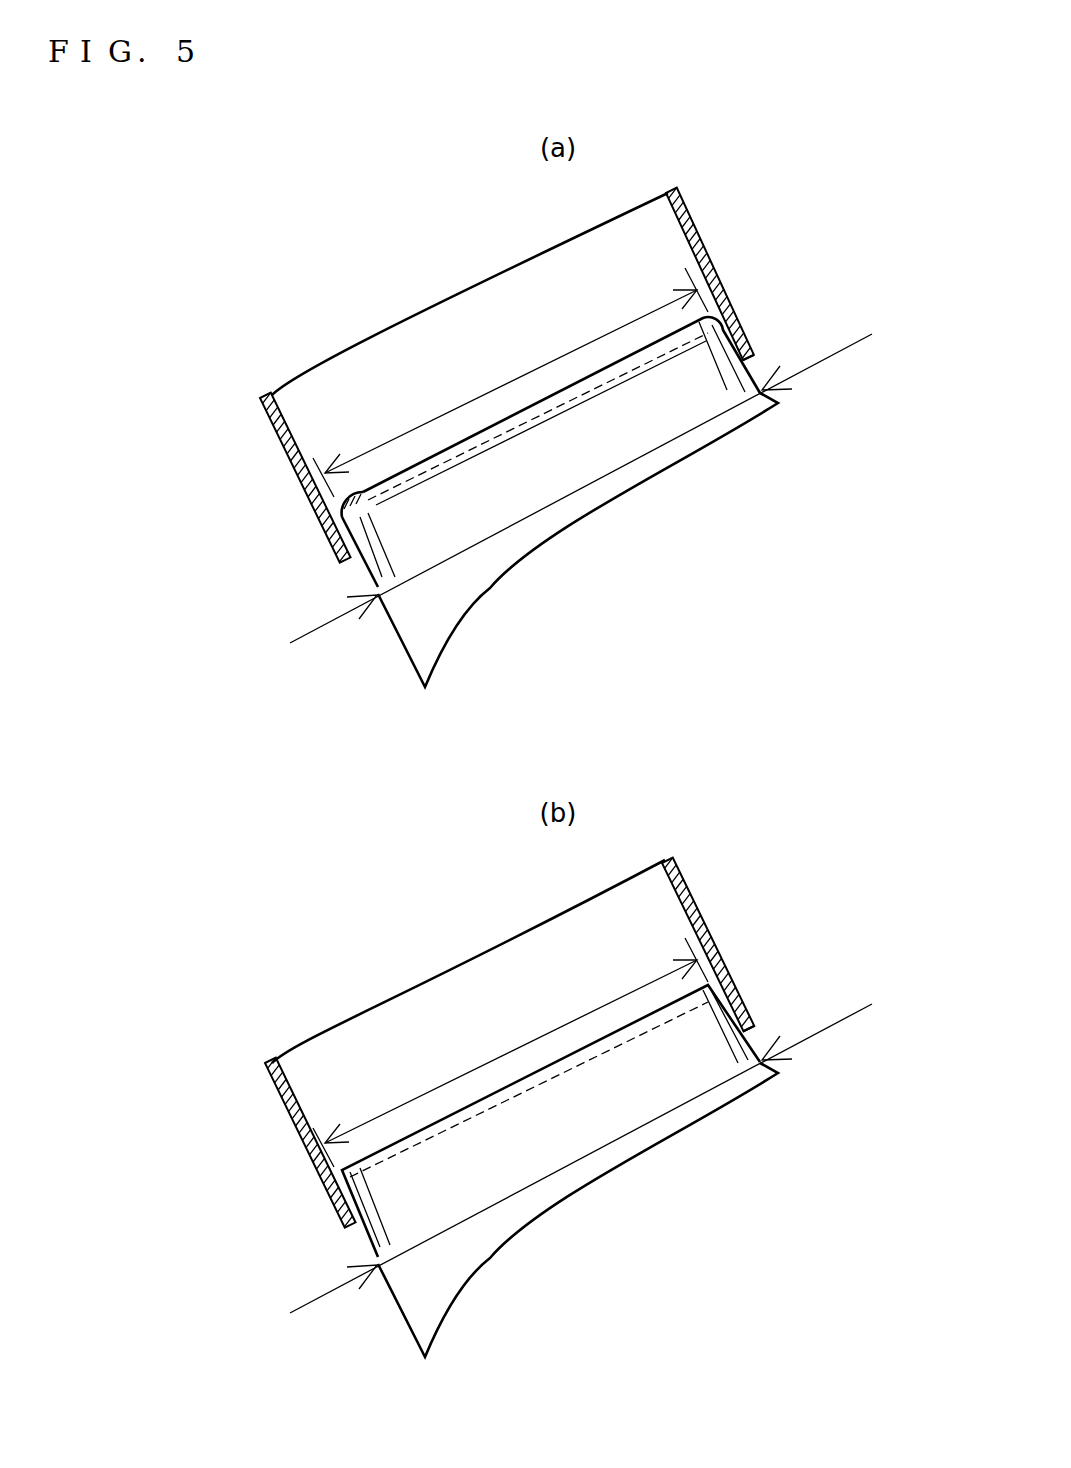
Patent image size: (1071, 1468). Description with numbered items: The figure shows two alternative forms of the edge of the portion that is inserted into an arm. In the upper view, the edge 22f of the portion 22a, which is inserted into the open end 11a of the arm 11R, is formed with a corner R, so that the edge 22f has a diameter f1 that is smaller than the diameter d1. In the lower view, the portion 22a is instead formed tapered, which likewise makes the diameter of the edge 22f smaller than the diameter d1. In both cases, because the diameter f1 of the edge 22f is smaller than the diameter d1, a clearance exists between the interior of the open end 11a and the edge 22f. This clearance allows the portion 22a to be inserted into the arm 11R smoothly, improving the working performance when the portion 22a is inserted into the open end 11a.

The arm 11R is at (700, 242).
The open end 11a is at (761, 351).
The edge 22f is at (600, 370).
The portion 22a is at (652, 432).
The diameter of the edge f1 is at (520, 377).
The diameter d1 is at (577, 491).
The corner R is at (398, 485).